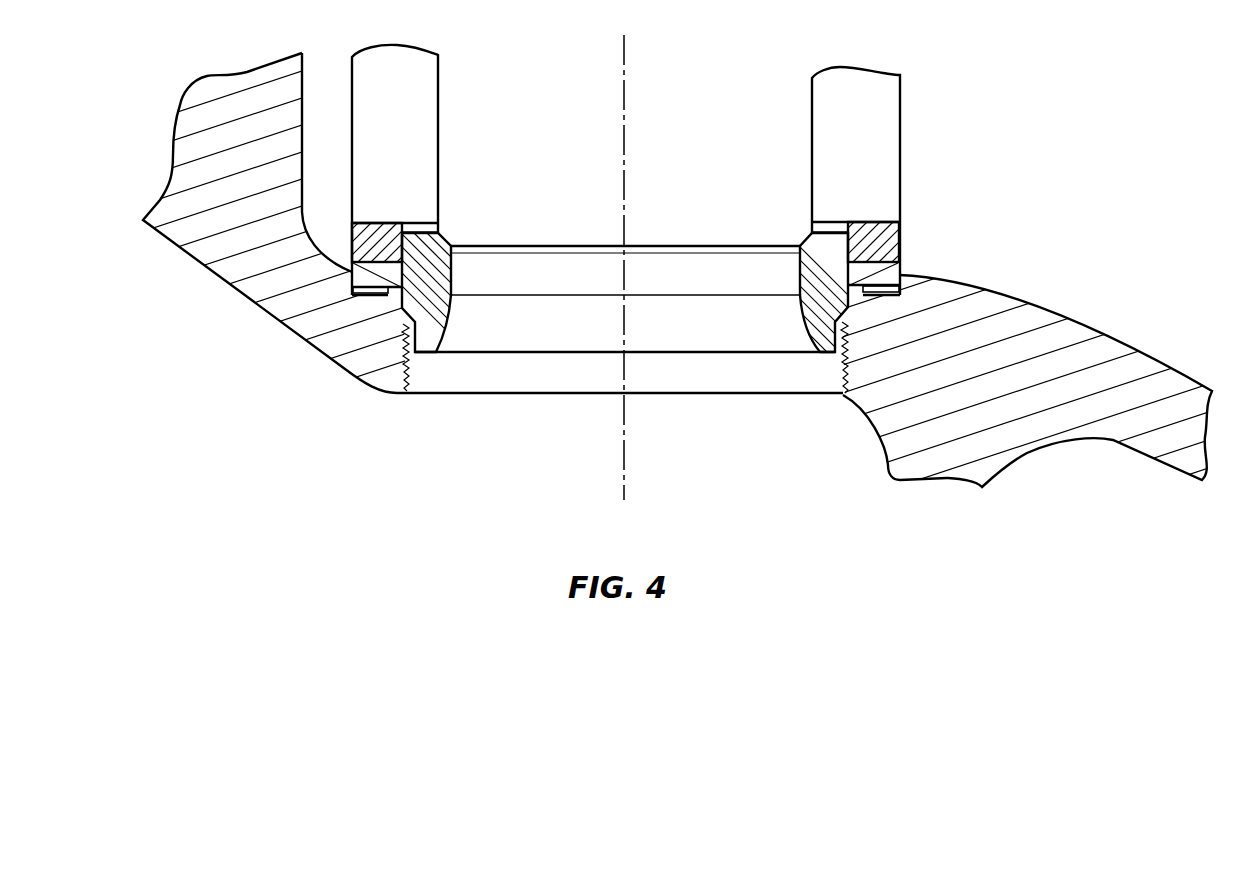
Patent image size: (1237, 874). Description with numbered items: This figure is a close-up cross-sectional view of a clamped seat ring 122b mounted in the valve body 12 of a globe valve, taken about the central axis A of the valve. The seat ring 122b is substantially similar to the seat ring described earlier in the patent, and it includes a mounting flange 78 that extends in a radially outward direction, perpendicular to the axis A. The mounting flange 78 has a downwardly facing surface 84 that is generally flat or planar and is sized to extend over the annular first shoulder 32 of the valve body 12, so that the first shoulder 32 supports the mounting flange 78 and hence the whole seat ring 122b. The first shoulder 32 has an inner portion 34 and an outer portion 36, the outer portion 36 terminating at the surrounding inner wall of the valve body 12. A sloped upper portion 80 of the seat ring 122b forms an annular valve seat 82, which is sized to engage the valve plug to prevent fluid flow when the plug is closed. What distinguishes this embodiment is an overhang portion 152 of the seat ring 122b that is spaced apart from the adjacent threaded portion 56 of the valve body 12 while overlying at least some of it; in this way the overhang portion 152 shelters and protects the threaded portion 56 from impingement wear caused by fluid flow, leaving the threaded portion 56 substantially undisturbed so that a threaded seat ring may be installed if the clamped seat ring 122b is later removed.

The valve body 12 is at (242, 296).
The outer portion 36 is at (938, 283).
The first shoulder 32 is at (878, 293).
The inner portion 34 is at (850, 393).
The threaded portion 56 is at (388, 372).
The mounting flange 78 is at (903, 262).
The upper portion 80 is at (830, 231).
The valve seat 82 is at (807, 247).
The downwardly facing surface 84 is at (859, 297).
The seat ring 122b is at (846, 225).
The overhang portion 152 is at (432, 352).
The axis A is at (625, 173).